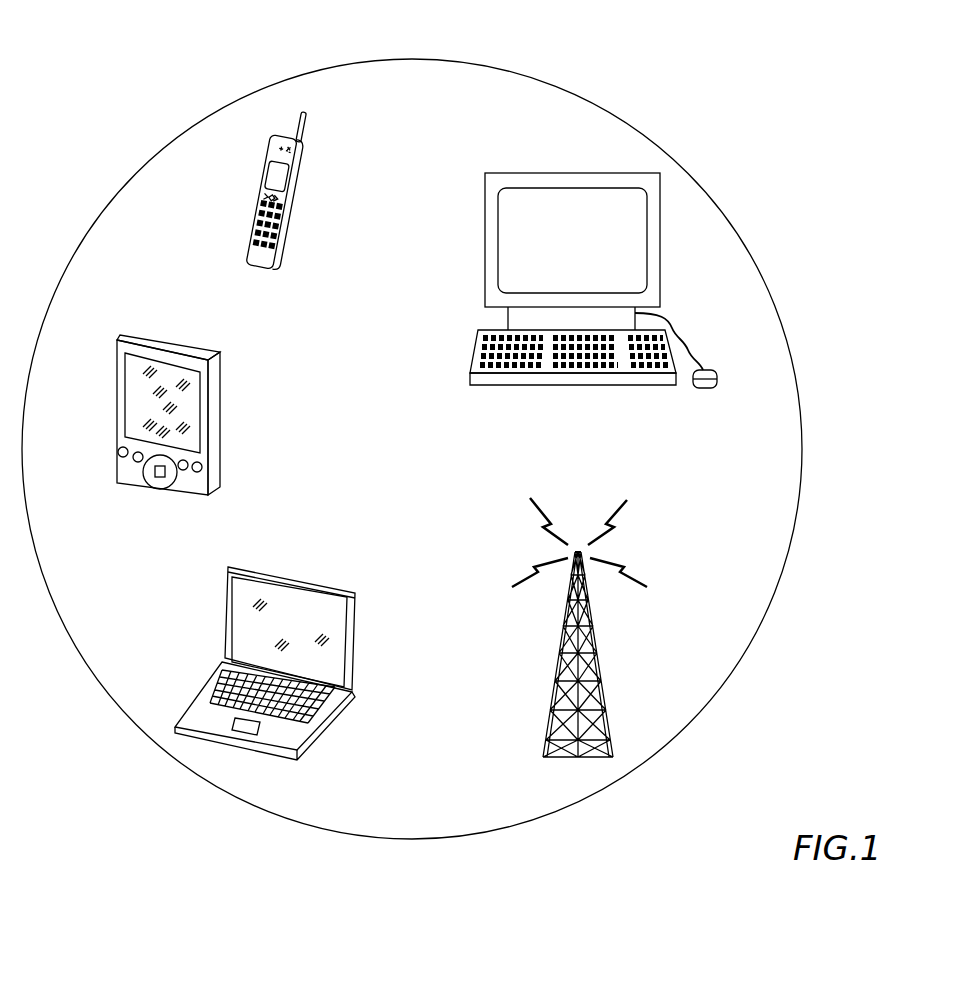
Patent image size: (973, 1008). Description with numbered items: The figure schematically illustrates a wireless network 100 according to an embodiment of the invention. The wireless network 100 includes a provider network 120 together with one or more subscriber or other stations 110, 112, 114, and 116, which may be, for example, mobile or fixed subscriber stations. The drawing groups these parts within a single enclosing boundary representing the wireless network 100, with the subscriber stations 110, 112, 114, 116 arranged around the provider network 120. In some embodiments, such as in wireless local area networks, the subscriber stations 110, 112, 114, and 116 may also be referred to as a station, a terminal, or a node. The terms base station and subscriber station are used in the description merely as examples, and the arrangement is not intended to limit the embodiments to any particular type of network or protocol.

The wireless network 100 is at (863, 100).
The subscriber station 110 is at (293, 580).
The subscriber station 112 is at (222, 437).
The subscriber station 114 is at (247, 183).
The subscriber station 116 is at (548, 173).
The provider network 120 is at (603, 687).